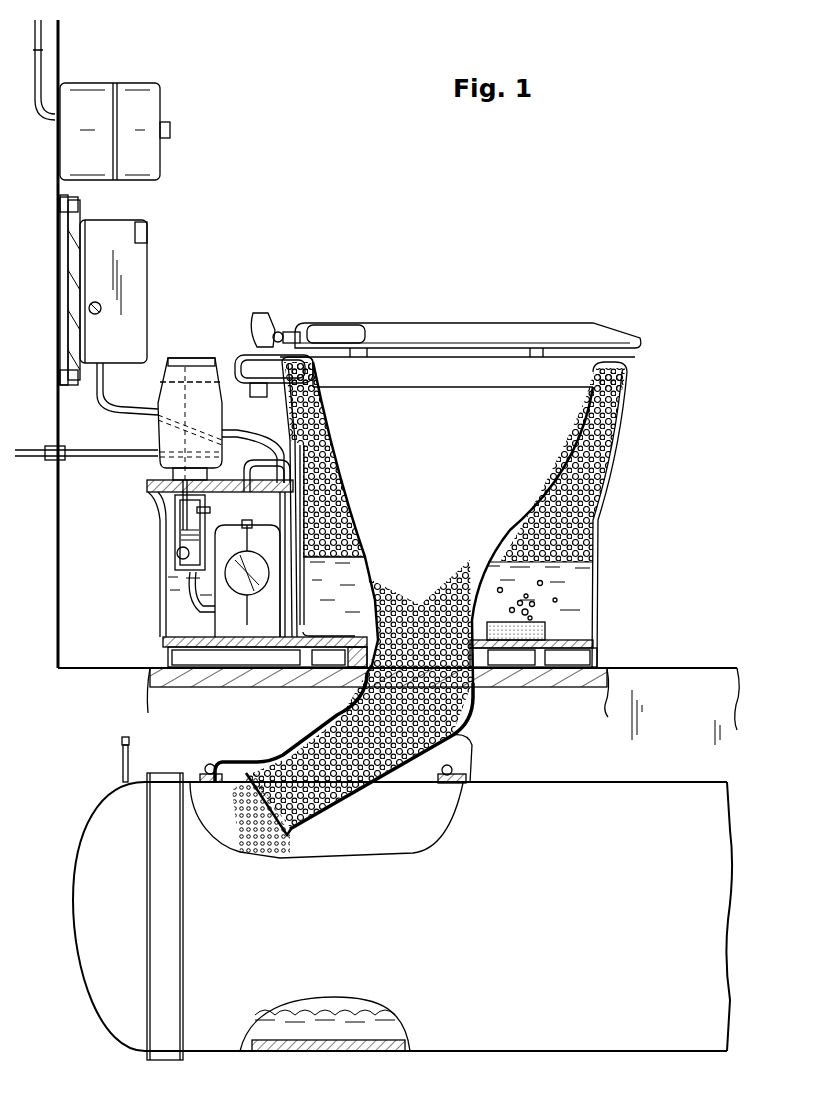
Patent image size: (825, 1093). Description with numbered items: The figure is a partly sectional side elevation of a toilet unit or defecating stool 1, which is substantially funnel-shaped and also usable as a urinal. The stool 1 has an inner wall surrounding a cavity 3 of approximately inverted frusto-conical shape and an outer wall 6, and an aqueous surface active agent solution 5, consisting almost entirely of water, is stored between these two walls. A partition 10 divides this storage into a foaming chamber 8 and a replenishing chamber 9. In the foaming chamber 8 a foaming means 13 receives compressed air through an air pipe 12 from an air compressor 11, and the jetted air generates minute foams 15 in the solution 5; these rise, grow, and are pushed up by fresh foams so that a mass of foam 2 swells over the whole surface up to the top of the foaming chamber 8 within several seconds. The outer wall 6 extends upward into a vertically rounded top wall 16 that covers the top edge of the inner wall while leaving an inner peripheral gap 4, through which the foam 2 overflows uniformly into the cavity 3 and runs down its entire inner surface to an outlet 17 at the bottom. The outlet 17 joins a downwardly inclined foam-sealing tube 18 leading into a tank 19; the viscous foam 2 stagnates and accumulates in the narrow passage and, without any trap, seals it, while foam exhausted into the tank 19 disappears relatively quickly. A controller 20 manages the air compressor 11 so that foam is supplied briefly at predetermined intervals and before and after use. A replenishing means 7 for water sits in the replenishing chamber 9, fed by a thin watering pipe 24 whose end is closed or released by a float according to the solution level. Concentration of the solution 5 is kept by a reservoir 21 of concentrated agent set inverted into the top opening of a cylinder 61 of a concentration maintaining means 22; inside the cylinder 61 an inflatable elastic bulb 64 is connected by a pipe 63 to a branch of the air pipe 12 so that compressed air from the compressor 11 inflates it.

The toilet unit or defecating stool 1 is at (443, 355).
The foam 2 is at (567, 533).
The cavity 3 is at (483, 420).
The inner peripheral gap 4 is at (625, 366).
The aqueous surface active agent solution 5 is at (573, 597).
The outer wall 6 is at (600, 490).
The replenishing means 7 is at (263, 622).
The foaming chamber 8 is at (573, 617).
The replenishing chamber 9 is at (182, 623).
The partition 10 is at (300, 517).
The air compressor 11 is at (140, 282).
The air pipe 12 is at (240, 441).
The foaming means 13 is at (510, 640).
The minute foams 15 is at (542, 607).
The vertically rounded top wall 16 is at (315, 370).
The outlet 17 is at (365, 688).
The foam-sealing tube 18 is at (378, 777).
The tank 19 is at (80, 903).
The controller 20 is at (150, 105).
The reservoir 21 is at (195, 358).
The concentration maintaining means 22 is at (183, 537).
The watering pipe 24 is at (93, 450).
The cylinder 61 is at (178, 518).
The pipe 63 is at (187, 603).
The elastic bulb 64 is at (180, 555).